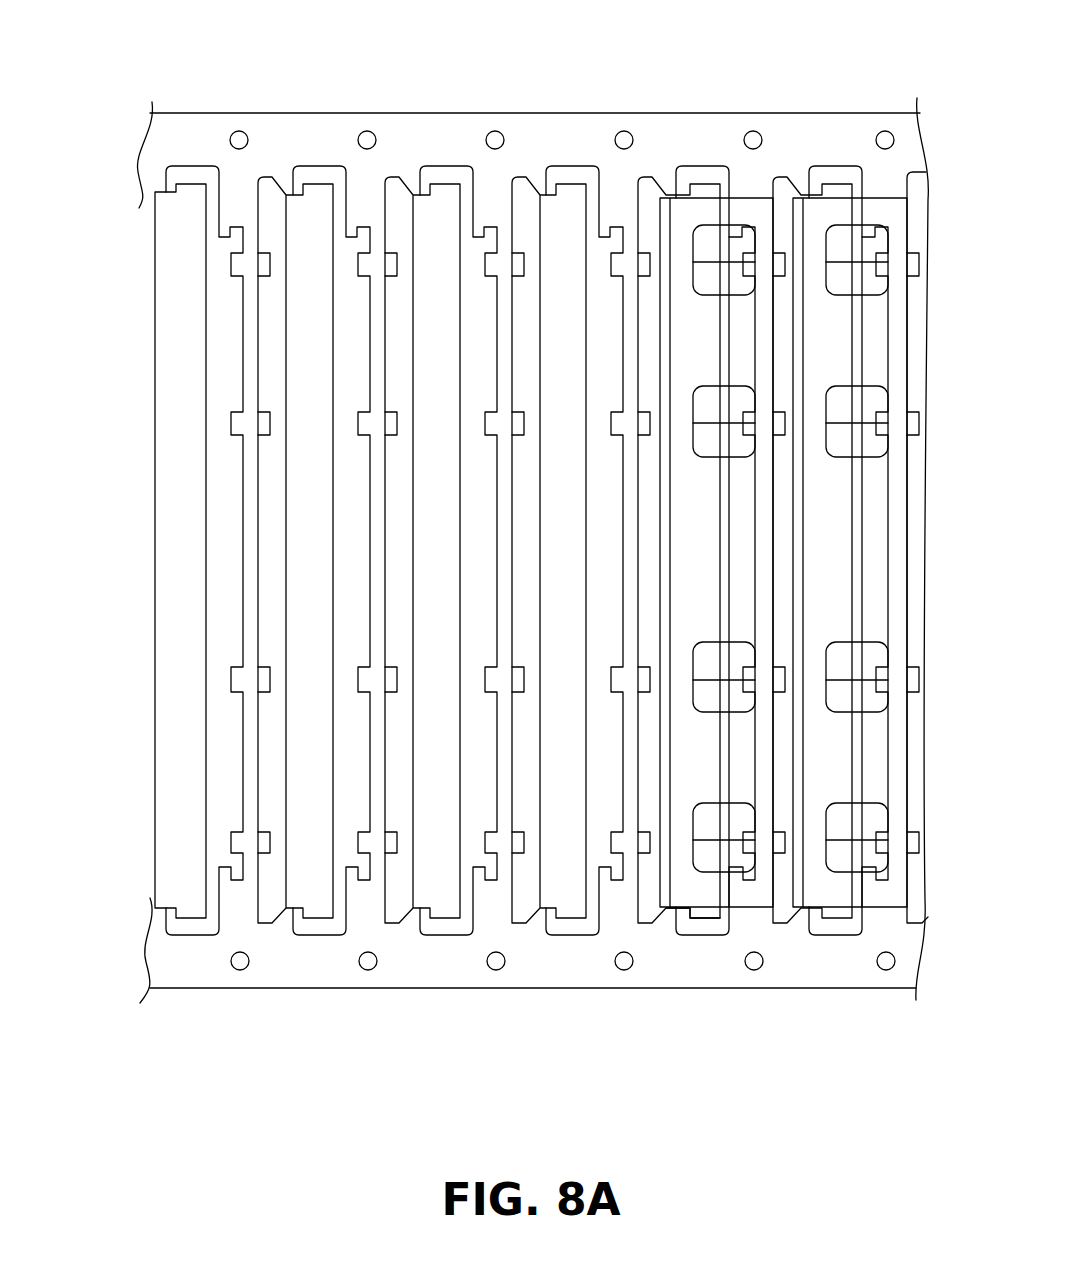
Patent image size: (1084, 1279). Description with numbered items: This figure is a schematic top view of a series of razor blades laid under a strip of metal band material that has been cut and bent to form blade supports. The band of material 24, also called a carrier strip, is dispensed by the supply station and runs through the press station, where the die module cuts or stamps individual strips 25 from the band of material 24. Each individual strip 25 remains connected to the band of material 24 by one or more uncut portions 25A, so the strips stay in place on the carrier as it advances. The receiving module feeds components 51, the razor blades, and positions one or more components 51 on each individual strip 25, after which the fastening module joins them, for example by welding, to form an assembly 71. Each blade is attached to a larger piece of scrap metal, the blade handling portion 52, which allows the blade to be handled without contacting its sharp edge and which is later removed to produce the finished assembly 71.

The band of material 24 is at (453, 135).
The individual strip 25 is at (174, 548).
The uncut portion 25A is at (168, 190).
The assembly 71 is at (658, 196).
The component 51 is at (657, 909).
The blade handling portion 52 is at (680, 917).